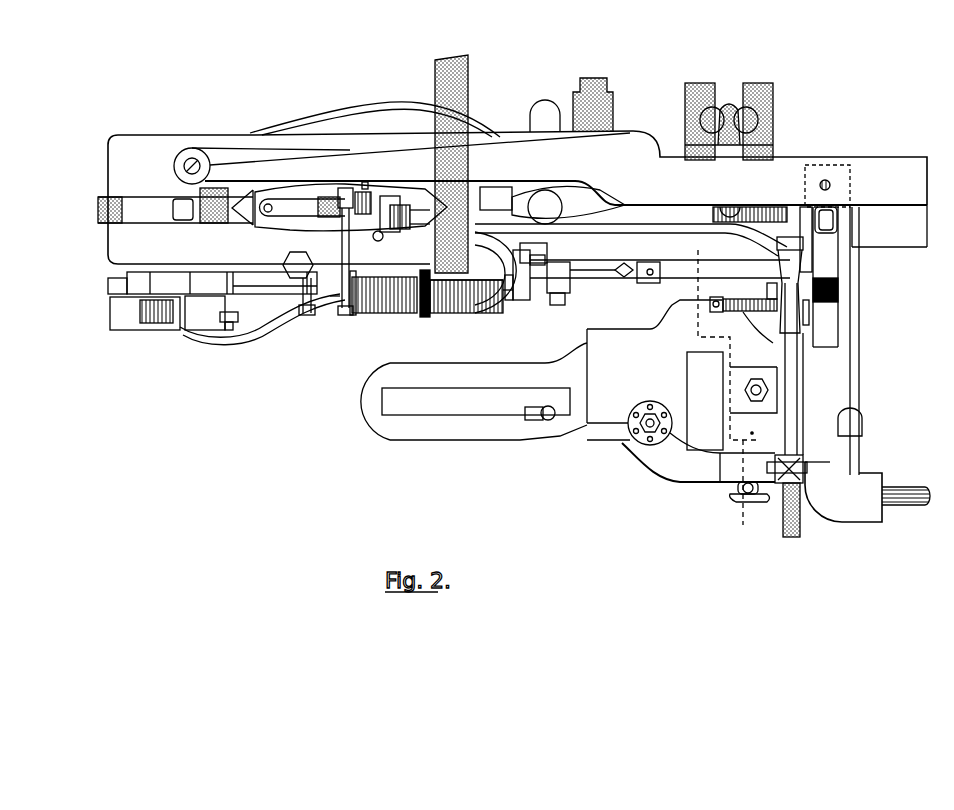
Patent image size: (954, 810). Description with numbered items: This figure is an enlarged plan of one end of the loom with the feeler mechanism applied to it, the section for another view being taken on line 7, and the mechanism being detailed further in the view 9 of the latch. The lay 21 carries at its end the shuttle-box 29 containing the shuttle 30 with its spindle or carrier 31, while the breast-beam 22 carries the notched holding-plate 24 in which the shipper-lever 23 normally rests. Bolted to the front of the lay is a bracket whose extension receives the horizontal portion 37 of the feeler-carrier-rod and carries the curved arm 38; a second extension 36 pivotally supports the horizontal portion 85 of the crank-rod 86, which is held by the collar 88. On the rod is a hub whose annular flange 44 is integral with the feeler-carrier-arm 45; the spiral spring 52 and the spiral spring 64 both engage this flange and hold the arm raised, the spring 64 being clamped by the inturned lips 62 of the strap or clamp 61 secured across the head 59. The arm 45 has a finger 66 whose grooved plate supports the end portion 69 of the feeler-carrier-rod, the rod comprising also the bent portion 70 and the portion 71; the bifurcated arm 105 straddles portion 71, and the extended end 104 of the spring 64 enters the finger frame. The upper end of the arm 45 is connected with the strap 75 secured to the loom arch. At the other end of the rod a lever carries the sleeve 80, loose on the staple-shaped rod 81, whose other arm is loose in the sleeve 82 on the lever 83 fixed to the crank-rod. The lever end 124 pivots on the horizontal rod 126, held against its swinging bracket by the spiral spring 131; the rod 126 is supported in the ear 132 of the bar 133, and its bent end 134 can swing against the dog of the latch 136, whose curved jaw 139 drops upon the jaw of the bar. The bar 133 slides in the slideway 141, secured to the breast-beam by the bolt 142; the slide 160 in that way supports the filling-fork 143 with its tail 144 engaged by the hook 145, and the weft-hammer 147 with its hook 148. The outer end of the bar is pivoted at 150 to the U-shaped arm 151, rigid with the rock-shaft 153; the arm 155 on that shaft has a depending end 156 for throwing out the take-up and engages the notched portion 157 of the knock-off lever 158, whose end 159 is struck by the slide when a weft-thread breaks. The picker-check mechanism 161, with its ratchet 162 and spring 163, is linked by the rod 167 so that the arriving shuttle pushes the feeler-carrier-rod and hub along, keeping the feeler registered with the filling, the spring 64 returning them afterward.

The section line 7 is at (721, 394).
The pin 9 is at (604, 280).
The lay 21 is at (832, 157).
The breast-beam 22 is at (587, 333).
The shipper-lever 23 is at (543, 420).
The notched holding-plate 24 is at (452, 441).
The shuttle-box 29 is at (107, 163).
The shuttle 30 is at (262, 222).
The spindle or carrier 31 is at (336, 180).
The upward extension 36 is at (648, 284).
The horizontal portion of the feeler-carrier-rod 37 is at (518, 301).
The curved arm 38 is at (483, 252).
The annular flange 44 is at (435, 316).
The feeler-carrier-arm 45 is at (423, 318).
The spiral spring 52 is at (462, 315).
The head 59 is at (343, 312).
The strap or clamp 61 is at (330, 298).
The inturned lips 62 is at (353, 315).
The spiral spring 64 is at (390, 314).
The finger 66 is at (392, 232).
The horizontal portion of the feeler-carrier-rod 69 is at (346, 190).
The portion of the feeler-carrier-rod 70 is at (305, 278).
The portion of the feeler-carrier-rod 71 is at (340, 238).
The strap 75 is at (469, 92).
The sleeve 80 is at (580, 266).
The staple-shaped rod 81 is at (508, 300).
The sleeve 82 is at (546, 261).
The lever 83 is at (548, 250).
The horizontal portion of crank-rod 85 is at (575, 292).
The crank-rod 86 is at (713, 296).
The collar 88 is at (624, 278).
The extended end of the spring 104 is at (368, 184).
The bifurcated arm 105 is at (313, 180).
The end of lever 124 is at (770, 296).
The horizontal rod 126 is at (708, 305).
The spiral spring 131 is at (738, 312).
The ear 132 is at (795, 300).
The bar 133 is at (800, 383).
The bent end of rod 134 is at (803, 318).
The latch 136 is at (806, 327).
The downwardly curved jaw 139 is at (838, 265).
The slideway 141 is at (805, 405).
The bolt 142 is at (755, 400).
The filling-fork 143 is at (851, 185).
The tail 144 is at (838, 222).
The hook 145 is at (815, 215).
The weft-hammer 147 is at (838, 292).
The hook 148 is at (797, 233).
The pivotal connection 150 is at (785, 483).
The U-shaped arm 151 is at (791, 538).
The rock-shaft 153 is at (890, 505).
The arm 155 is at (738, 490).
The depending end 156 is at (760, 464).
The notched portion 157 is at (745, 500).
The knock-off lever 158 is at (610, 440).
The end of knock-off lever 159 is at (825, 470).
The slide 160 is at (840, 368).
The picker-check mechanism 161 is at (222, 332).
The ratchet 162 is at (107, 287).
The spring 163 is at (150, 308).
The rod 167 is at (250, 341).